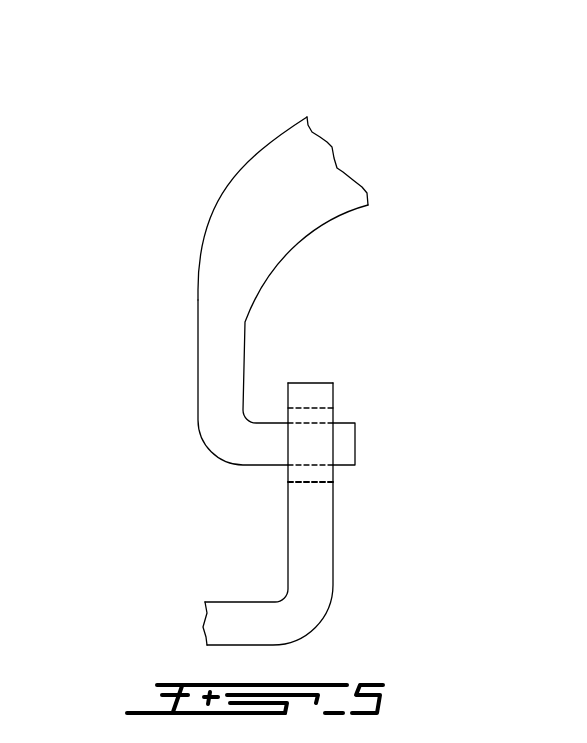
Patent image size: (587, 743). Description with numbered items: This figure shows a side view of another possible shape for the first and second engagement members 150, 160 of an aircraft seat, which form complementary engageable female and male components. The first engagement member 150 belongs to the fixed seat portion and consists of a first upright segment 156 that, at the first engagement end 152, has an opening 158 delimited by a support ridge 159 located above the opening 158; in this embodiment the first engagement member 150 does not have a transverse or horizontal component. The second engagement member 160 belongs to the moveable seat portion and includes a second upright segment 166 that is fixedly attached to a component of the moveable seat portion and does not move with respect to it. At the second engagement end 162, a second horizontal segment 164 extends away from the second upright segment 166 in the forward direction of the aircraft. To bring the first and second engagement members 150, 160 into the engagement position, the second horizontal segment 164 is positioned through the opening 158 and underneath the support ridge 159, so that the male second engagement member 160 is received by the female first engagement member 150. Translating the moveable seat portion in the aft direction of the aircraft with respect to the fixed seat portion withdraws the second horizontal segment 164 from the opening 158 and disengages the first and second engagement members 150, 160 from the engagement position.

The first engagement member 150 is at (348, 487).
The first engagement end 152 is at (360, 392).
The first upright segment 156 is at (333, 566).
The opening 158 is at (317, 475).
The support ridge 159 is at (312, 397).
The second engagement member 160 is at (192, 157).
The second engagement end 162 is at (214, 478).
The second horizontal segment 164 is at (277, 422).
The second upright segment 166 is at (246, 328).